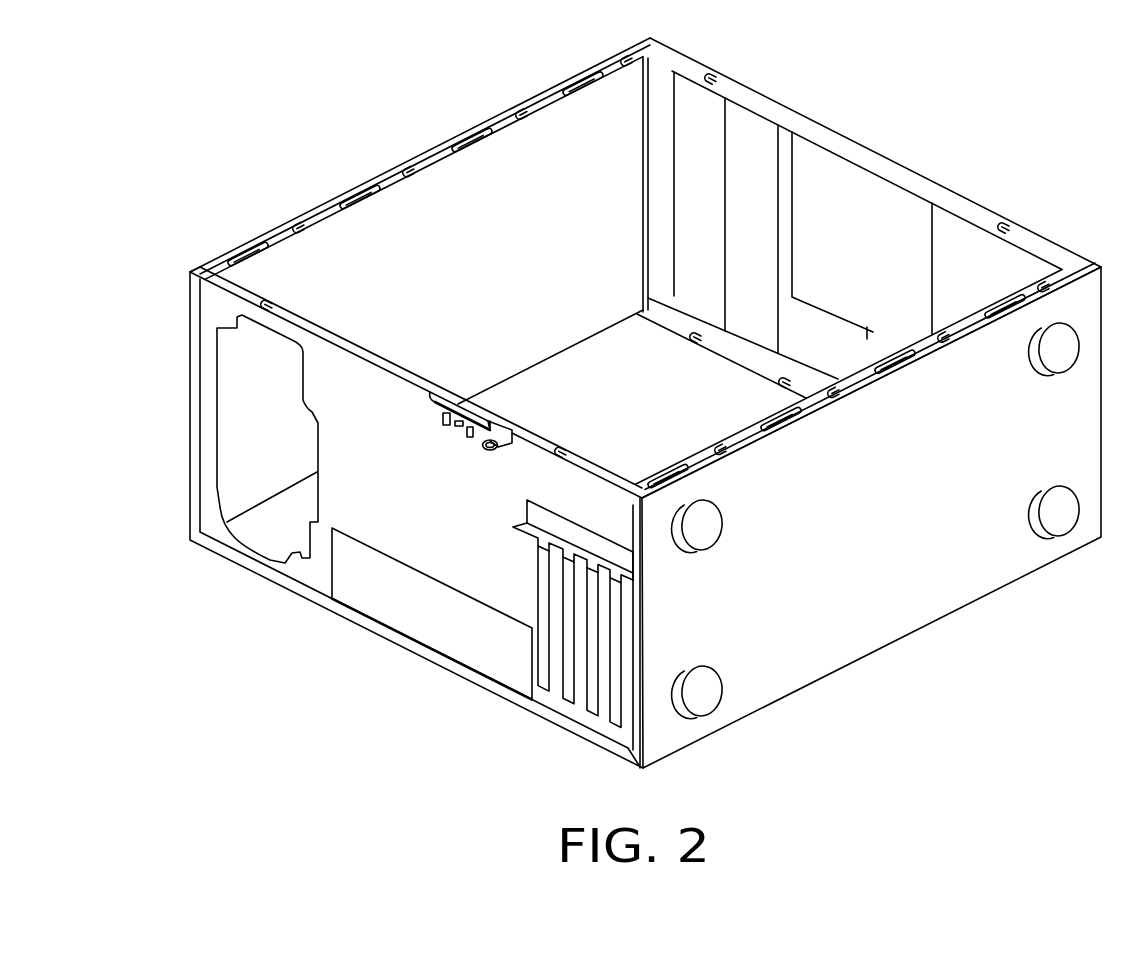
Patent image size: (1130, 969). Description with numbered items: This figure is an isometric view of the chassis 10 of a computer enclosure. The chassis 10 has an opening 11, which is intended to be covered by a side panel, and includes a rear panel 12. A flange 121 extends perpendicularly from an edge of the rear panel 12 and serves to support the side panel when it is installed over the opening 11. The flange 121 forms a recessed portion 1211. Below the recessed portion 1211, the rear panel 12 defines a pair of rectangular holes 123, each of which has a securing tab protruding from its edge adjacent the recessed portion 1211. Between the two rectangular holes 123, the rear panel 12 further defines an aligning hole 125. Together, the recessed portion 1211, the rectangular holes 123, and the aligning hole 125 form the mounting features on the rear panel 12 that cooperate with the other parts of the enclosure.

The chassis 10 is at (868, 125).
The opening 11 is at (343, 250).
The rear panel 12 is at (313, 570).
The flange 121 is at (213, 277).
The recessed portion 1211 is at (440, 415).
The aligning hole 125 is at (455, 428).
The rectangular holes 123 is at (467, 437).